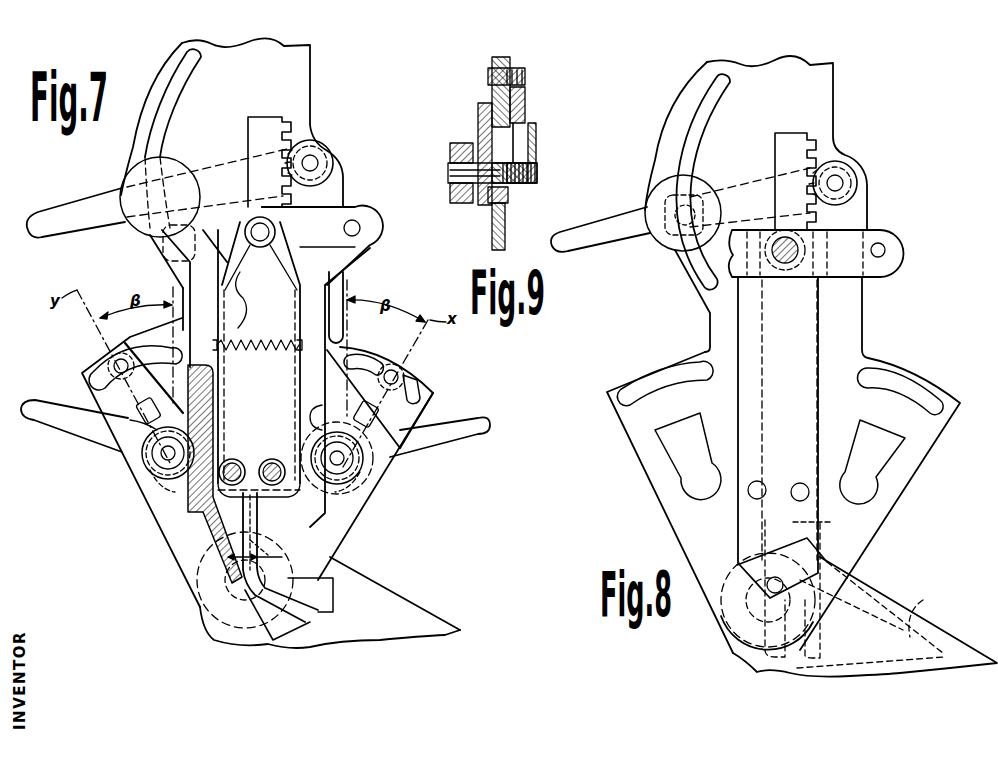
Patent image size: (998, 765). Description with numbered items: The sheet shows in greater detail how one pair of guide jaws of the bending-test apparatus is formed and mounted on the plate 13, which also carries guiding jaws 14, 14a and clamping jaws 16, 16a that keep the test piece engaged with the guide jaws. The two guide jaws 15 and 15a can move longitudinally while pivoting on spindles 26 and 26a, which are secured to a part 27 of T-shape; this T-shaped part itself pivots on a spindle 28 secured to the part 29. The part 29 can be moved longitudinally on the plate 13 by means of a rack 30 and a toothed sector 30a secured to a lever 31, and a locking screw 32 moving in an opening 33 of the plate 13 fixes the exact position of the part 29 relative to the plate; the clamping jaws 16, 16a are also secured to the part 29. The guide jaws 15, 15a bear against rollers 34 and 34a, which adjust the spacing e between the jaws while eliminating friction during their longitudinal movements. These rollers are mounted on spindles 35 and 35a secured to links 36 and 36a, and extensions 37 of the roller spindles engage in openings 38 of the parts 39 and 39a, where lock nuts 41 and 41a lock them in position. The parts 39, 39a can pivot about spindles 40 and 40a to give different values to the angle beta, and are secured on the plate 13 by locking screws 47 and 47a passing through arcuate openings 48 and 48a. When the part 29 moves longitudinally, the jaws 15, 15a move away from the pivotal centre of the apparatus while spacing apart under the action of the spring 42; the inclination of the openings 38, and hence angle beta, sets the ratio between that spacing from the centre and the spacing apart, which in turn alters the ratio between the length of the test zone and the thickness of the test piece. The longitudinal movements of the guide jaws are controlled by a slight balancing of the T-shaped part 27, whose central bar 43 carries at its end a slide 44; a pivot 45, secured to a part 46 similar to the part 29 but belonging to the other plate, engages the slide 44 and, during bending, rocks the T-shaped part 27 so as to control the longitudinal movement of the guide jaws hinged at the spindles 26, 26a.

In FIG. 7, the plate 13 is at (232, 133).
In FIG. 8, the plate 13 is at (756, 204).
In FIG. 7, the guiding jaw 14 is at (290, 624).
In FIG. 7, the guiding jaw 14a is at (327, 590).
In FIG. 7, the guide jaw 15 is at (205, 532).
In FIG. 7, the guide jaw 15a is at (287, 540).
In FIG. 7, the clamping jaw 16 is at (197, 508).
In FIG. 7, the clamping jaw 16a is at (312, 516).
In FIG. 7, the spindle 26 is at (156, 243).
In FIG. 7, the spindle 26a is at (352, 222).
In FIG. 8, the spindle 26a is at (880, 250).
In FIG. 7, the part of T-shape 27 is at (322, 245).
In FIG. 8, the part of T-shape 27 is at (816, 253).
In FIG. 7, the spindle 28 is at (252, 225).
In FIG. 8, the spindle 28 is at (785, 265).
In FIG. 7, the part 29 is at (313, 244).
In FIG. 8, the part 29 is at (820, 300).
In FIG. 8, the rack 30 is at (812, 148).
In FIG. 8, the toothed sector 30a is at (795, 181).
In FIG. 8, the lever 31 is at (600, 229).
In FIG. 8, the locking screw 32 is at (680, 237).
In FIG. 8, the opening 33 is at (683, 133).
In FIG. 7, the roller 34 is at (147, 452).
In FIG. 9, the roller 34 is at (450, 150).
In FIG. 7, the roller 34a is at (370, 487).
In FIG. 7, the spindle 35 is at (147, 470).
In FIG. 9, the spindle 35 is at (455, 175).
In FIG. 7, the spindle 35a is at (375, 470).
In FIG. 7, the link 36 is at (251, 359).
In FIG. 9, the link 36 is at (480, 110).
In FIG. 7, the link 36a is at (341, 368).
In FIG. 9, the extension 37 is at (502, 170).
In FIG. 7, the opening 38 is at (138, 418).
In FIG. 9, the opening 38 is at (512, 130).
In FIG. 7, the part 39 is at (97, 398).
In FIG. 9, the part 39 is at (490, 205).
In FIG. 7, the part 39a is at (428, 393).
In FIG. 7, the spindle 40 is at (153, 487).
In FIG. 9, the spindle 40 is at (505, 205).
In FIG. 7, the spindle 40a is at (358, 495).
In FIG. 7, the lock nut 41 is at (74, 426).
In FIG. 9, the lock nut 41 is at (536, 145).
In FIG. 7, the lock nut 41a is at (440, 437).
In FIG. 7, the spring 42 is at (257, 358).
In FIG. 8, the central bar 43 is at (826, 524).
In FIG. 8, the slide 44 is at (823, 625).
In FIG. 8, the pivot 45 is at (816, 582).
In FIG. 8, the part 46 is at (917, 612).
In FIG. 7, the locking screw 47 is at (125, 355).
In FIG. 9, the locking screw 47 is at (492, 72).
In FIG. 7, the locking screw 47a is at (398, 378).
In FIG. 7, the arcuate opening 48 is at (100, 378).
In FIG. 8, the arcuate opening 48 is at (665, 372).
In FIG. 7, the arcuate opening 48a is at (355, 357).